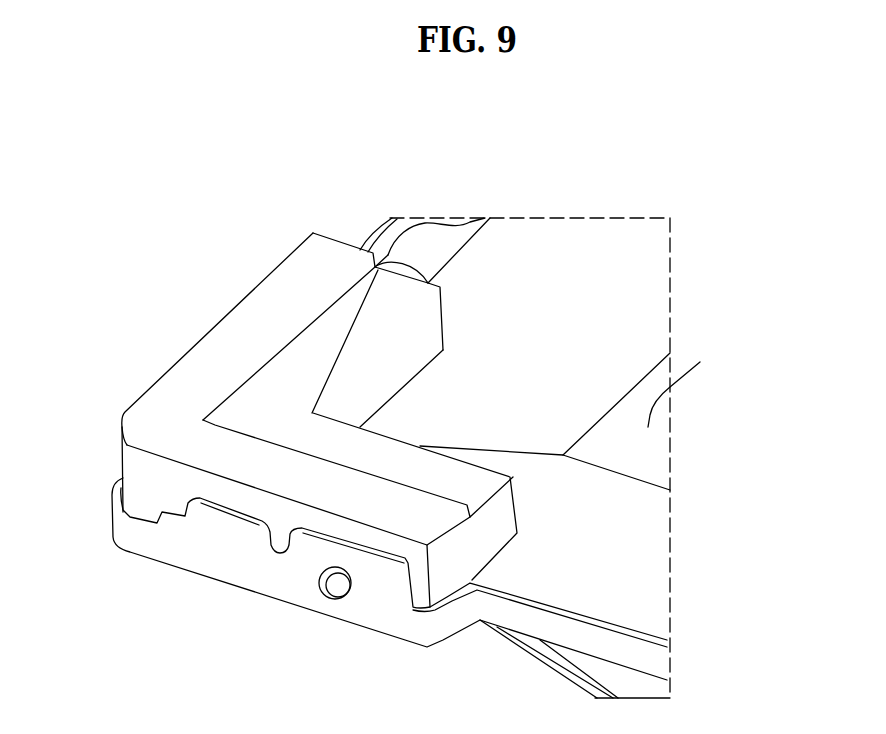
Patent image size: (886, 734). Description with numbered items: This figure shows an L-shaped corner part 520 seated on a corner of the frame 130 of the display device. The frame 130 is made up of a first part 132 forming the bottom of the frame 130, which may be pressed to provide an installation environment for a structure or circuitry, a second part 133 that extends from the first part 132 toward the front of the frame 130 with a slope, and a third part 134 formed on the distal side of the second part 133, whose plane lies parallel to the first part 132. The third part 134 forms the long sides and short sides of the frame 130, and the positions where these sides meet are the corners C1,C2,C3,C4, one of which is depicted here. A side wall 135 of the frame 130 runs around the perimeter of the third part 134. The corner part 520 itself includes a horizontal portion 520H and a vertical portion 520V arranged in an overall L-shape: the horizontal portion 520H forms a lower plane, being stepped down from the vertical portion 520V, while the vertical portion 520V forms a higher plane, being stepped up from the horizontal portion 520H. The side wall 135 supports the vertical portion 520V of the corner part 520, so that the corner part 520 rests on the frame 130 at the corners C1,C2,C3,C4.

The frame 130 is at (527, 133).
The first part 132 is at (700, 362).
The second part 133 is at (580, 263).
The third part 134 is at (440, 240).
The side wall 135 is at (223, 542).
The corner part 520 is at (132, 245).
The horizontal portion 520H is at (320, 372).
The vertical portion 520V is at (203, 385).
The first, second, third and fourth corners C1,C2,C3,C4 is at (128, 567).